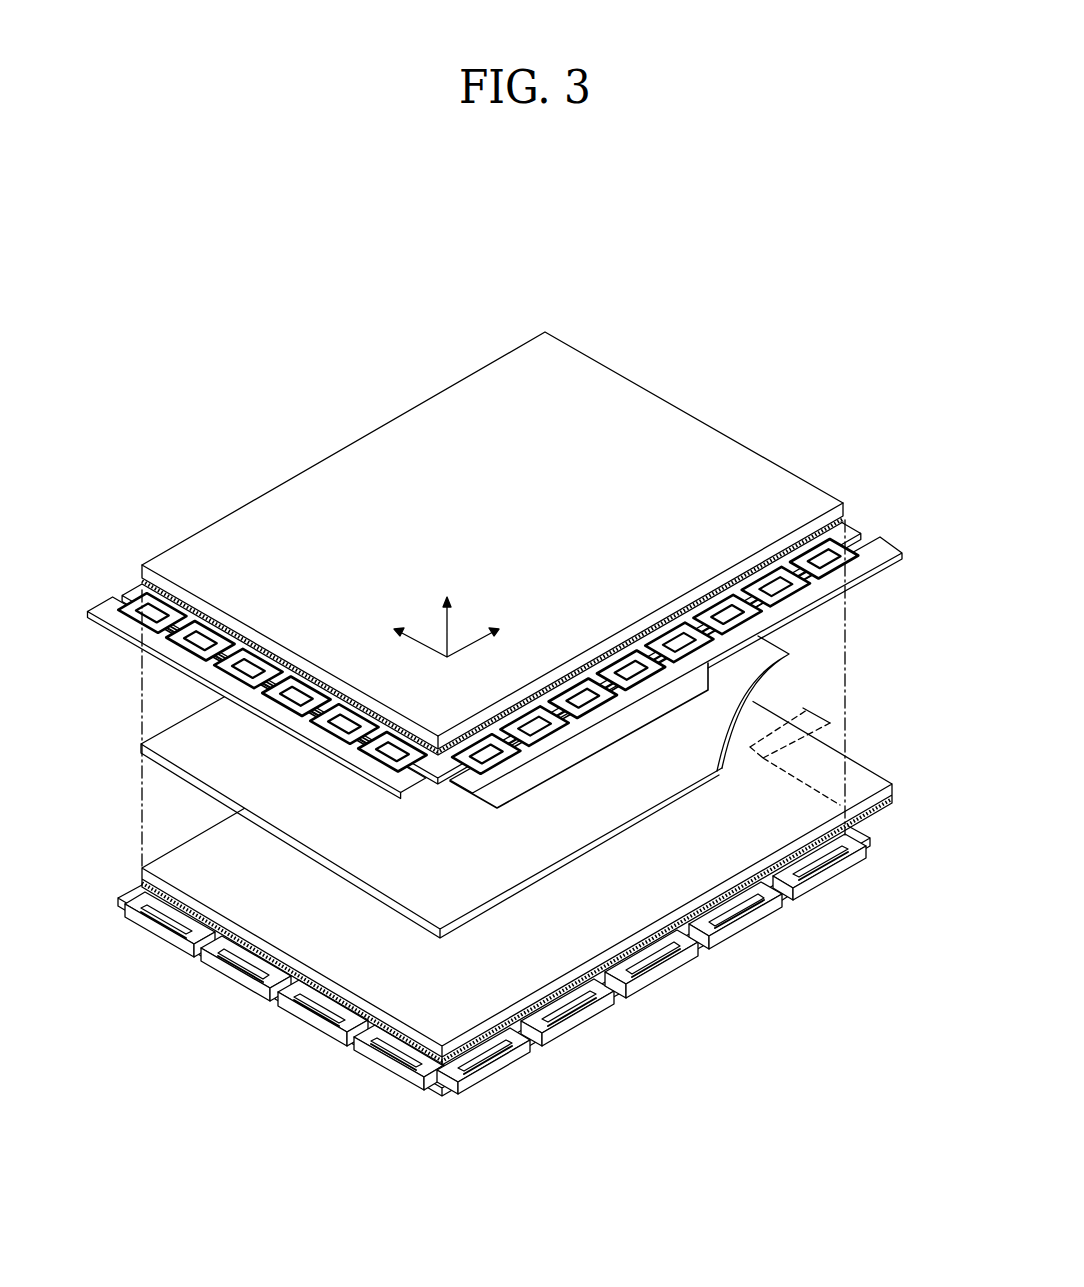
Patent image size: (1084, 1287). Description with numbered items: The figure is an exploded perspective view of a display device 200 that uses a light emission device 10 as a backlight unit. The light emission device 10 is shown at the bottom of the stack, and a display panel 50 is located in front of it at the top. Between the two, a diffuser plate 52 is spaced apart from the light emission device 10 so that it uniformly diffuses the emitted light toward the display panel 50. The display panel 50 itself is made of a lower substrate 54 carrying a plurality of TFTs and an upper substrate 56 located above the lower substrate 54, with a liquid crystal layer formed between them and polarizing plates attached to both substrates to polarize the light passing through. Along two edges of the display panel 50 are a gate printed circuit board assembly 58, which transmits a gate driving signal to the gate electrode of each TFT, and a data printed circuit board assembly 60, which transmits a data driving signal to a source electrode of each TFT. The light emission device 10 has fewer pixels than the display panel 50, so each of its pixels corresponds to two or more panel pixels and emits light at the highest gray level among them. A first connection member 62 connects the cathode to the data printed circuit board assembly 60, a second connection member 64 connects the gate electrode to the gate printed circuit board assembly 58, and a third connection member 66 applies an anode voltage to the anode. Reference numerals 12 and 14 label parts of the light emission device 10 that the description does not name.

The display device 200 is at (459, 284).
The light emission device 10 is at (163, 840).
The lower printed circuit board 12 is at (855, 832).
The lower substrate 14 is at (862, 778).
The display panel 50 is at (337, 446).
The diffuser plate 52 is at (188, 733).
The lower substrate 54 is at (857, 526).
The upper substrate 56 is at (636, 405).
The gate printed circuit board assembly 58 is at (103, 606).
The data printed circuit board assembly 60 is at (883, 548).
The first connection member 62 is at (633, 982).
The second connection member 64 is at (283, 1000).
The third connection member 66 is at (822, 708).